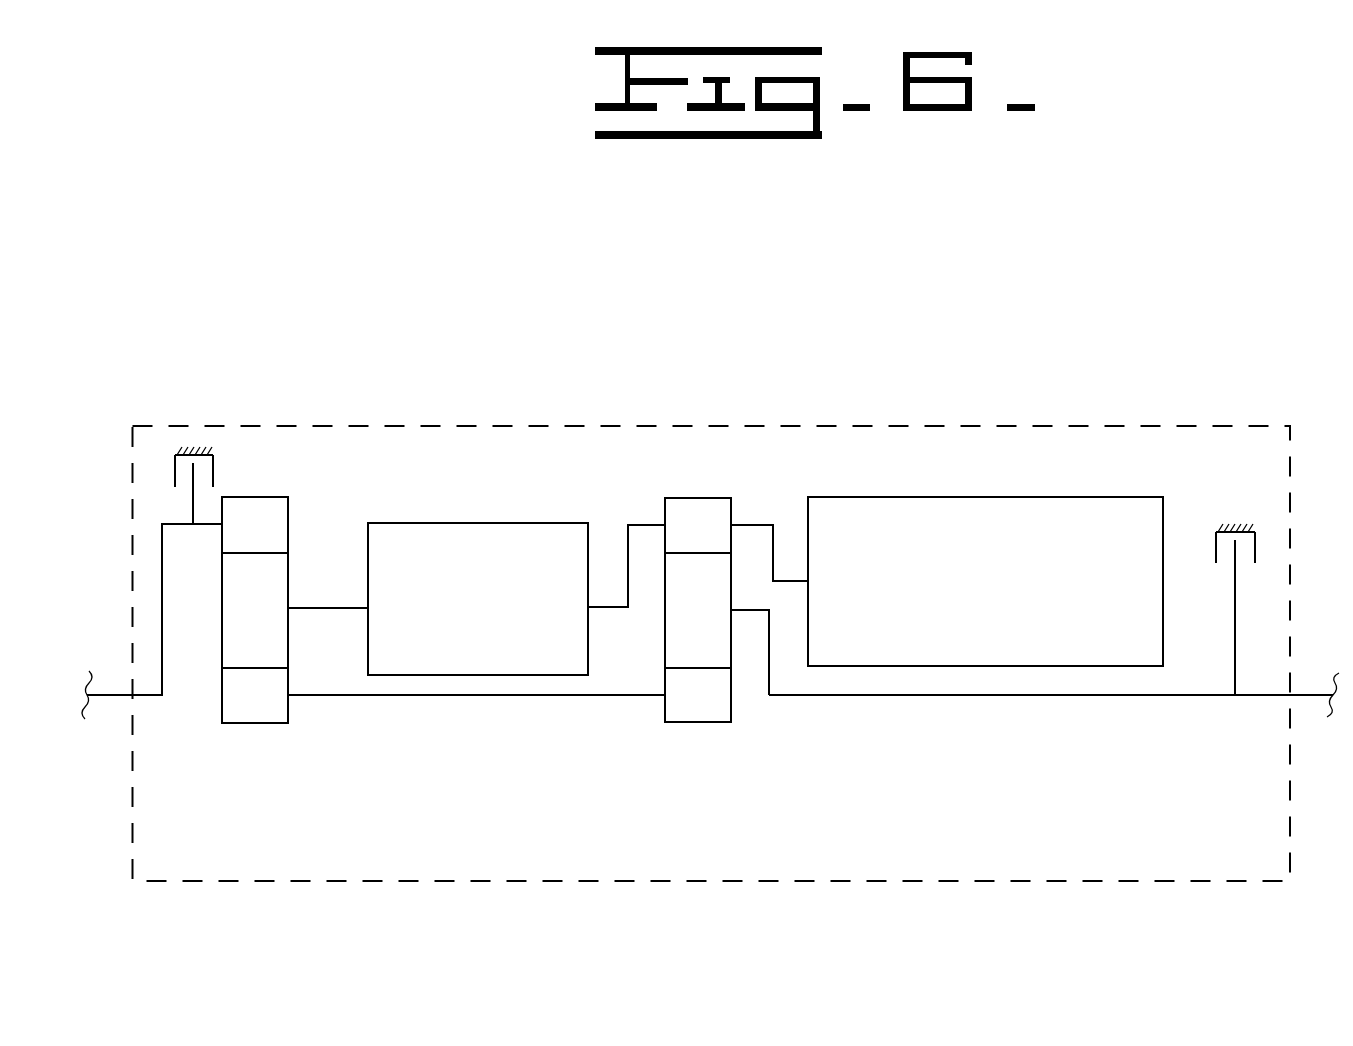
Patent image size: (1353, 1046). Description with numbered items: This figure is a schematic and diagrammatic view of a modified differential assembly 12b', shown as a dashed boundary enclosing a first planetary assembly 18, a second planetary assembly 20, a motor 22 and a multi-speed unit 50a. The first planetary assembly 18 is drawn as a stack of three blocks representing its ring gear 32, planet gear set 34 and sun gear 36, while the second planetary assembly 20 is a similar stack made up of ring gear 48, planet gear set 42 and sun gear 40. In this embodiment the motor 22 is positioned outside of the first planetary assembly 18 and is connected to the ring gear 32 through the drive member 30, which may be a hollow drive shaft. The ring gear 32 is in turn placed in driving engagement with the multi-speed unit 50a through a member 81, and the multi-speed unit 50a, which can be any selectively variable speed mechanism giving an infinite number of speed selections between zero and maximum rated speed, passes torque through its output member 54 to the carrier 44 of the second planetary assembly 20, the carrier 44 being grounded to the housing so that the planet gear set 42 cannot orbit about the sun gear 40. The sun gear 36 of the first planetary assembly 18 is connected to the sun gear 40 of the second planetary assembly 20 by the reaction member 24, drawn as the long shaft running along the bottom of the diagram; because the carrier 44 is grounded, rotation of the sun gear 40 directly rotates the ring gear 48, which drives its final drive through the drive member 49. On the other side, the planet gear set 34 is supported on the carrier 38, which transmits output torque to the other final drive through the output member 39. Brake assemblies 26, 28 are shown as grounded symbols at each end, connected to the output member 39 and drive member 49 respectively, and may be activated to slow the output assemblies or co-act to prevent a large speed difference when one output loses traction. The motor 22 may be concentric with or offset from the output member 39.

The differential assembly 12b' is at (712, 605).
The first planetary assembly 18 is at (716, 545).
The second planetary assembly 20 is at (279, 550).
The motor 22 is at (908, 498).
The reaction member 24 is at (483, 696).
The brake assembly 26 is at (1265, 536).
The brake assembly 28 is at (167, 449).
The drive member 30 is at (775, 545).
The ring gear 32 is at (716, 537).
The planet gear set 34 is at (716, 621).
The sun gear 36 is at (716, 707).
The carrier 38 is at (733, 610).
The output member 39 is at (1012, 695).
The sun gear 40 is at (273, 707).
The planet gear set 42 is at (273, 623).
The carrier 44 is at (290, 608).
The ring gear 48 is at (273, 536).
The drive member 49 is at (162, 589).
The multi-speed unit 50a is at (450, 519).
The output member 54 is at (347, 602).
The member 81 is at (645, 523).